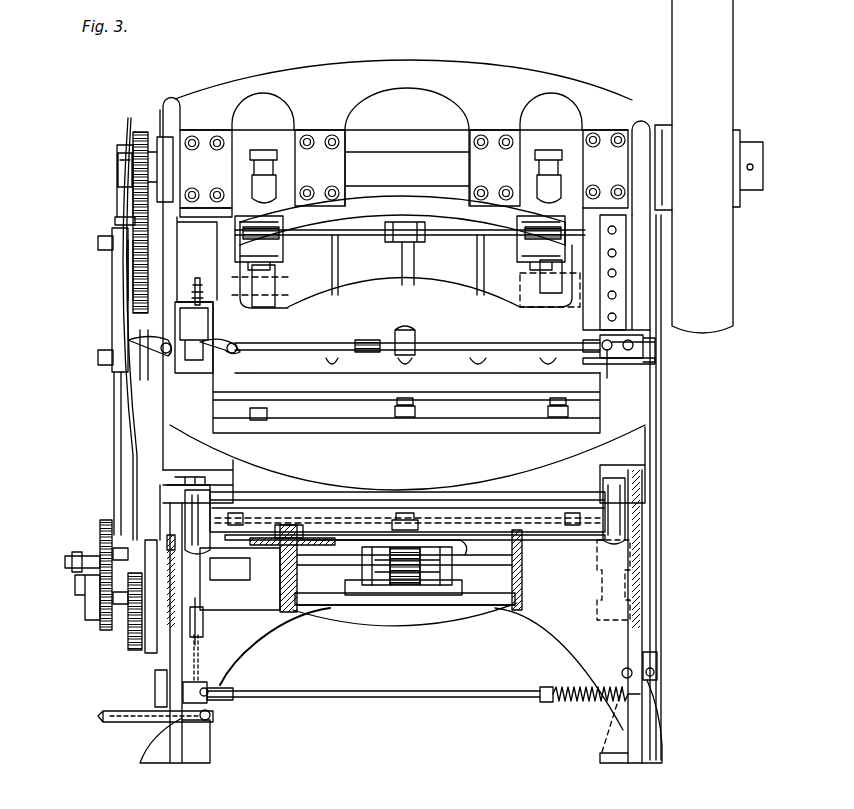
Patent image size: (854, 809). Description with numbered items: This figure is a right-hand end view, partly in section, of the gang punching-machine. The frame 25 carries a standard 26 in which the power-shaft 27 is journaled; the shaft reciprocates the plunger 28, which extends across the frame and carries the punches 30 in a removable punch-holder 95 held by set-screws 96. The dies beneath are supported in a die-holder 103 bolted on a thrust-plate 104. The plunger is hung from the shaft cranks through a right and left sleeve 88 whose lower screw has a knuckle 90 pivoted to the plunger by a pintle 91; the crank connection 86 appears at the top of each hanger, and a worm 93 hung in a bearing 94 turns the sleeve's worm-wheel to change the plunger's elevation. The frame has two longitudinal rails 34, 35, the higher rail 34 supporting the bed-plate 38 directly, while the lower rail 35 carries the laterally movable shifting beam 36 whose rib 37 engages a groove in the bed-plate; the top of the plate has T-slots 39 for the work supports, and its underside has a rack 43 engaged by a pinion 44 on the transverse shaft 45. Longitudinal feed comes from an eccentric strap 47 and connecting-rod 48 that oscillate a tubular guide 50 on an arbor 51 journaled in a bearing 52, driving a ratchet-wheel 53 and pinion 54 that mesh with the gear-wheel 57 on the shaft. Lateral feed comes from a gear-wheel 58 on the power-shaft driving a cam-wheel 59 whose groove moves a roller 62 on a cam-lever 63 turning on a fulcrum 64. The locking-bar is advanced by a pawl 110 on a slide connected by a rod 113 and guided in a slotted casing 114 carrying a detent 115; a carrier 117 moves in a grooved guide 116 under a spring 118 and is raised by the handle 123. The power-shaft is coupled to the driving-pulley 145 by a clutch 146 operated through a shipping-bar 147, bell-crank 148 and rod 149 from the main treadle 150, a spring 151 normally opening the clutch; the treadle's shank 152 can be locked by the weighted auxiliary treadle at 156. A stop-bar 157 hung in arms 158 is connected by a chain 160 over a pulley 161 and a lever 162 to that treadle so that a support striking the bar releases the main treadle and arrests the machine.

The frame 25 is at (640, 638).
The standard 26 is at (505, 120).
The power-shaft 27 is at (398, 162).
The plunger 28 is at (406, 271).
The punch 30 is at (238, 387).
The rail 34 is at (524, 568).
The rail 35 is at (280, 587).
The shifting beam 36 is at (305, 545).
The longitudinal rib 37 is at (290, 540).
The bed-plate 38 is at (518, 518).
The T-slots 39 is at (408, 512).
The rack 43 is at (455, 545).
The pinion 44 is at (455, 573).
The transverse shaft 45 is at (238, 565).
The strap 47 is at (117, 205).
The connecting-rod 48 is at (133, 438).
The tubular guide 50 is at (128, 615).
The arbor 51 is at (98, 625).
The bearing 52 is at (152, 625).
The ratchet-wheel 53 is at (120, 610).
The pinion 54 is at (88, 612).
The gear-wheel 57 is at (100, 530).
The gear-wheel 58 is at (140, 132).
The cam-wheel 59 is at (132, 298).
The roller 62 is at (105, 243).
The cam-lever 63 is at (112, 330).
The fulcrum 64 is at (100, 358).
The hanger 86 is at (262, 175).
The right and left sleeve 88 is at (300, 245).
The knuckle 90 is at (265, 285).
The pintle 91 is at (285, 283).
The worm 93 is at (250, 232).
The bearing 94 is at (407, 222).
The punch-holder 95 is at (445, 368).
The set-screws 96 is at (548, 360).
The die-holder 103 is at (342, 398).
The thrust-plate 104 is at (481, 414).
The pawl 110 is at (619, 369).
The rod 113 is at (310, 345).
The slotted casing 114 is at (630, 358).
The detent 115 is at (640, 342).
The grooved guide 116 is at (182, 362).
The carrier 117 is at (185, 330).
The spring 118 is at (188, 290).
The handle 123 is at (143, 372).
The driving-pulley 145 is at (702, 166).
The clutch 146 is at (660, 168).
The shipping-bar 147 is at (650, 498).
The bell-crank 148 is at (650, 682).
The rod 149 is at (400, 698).
The main treadle 150 is at (110, 722).
The spring 151 is at (590, 709).
The shank 152 is at (175, 720).
The weight 156 is at (155, 690).
The stop-bar 157 is at (230, 493).
The arms 158 is at (196, 520).
The chain 160 is at (203, 655).
The pulley 161 is at (205, 624).
The lever 162 is at (215, 690).